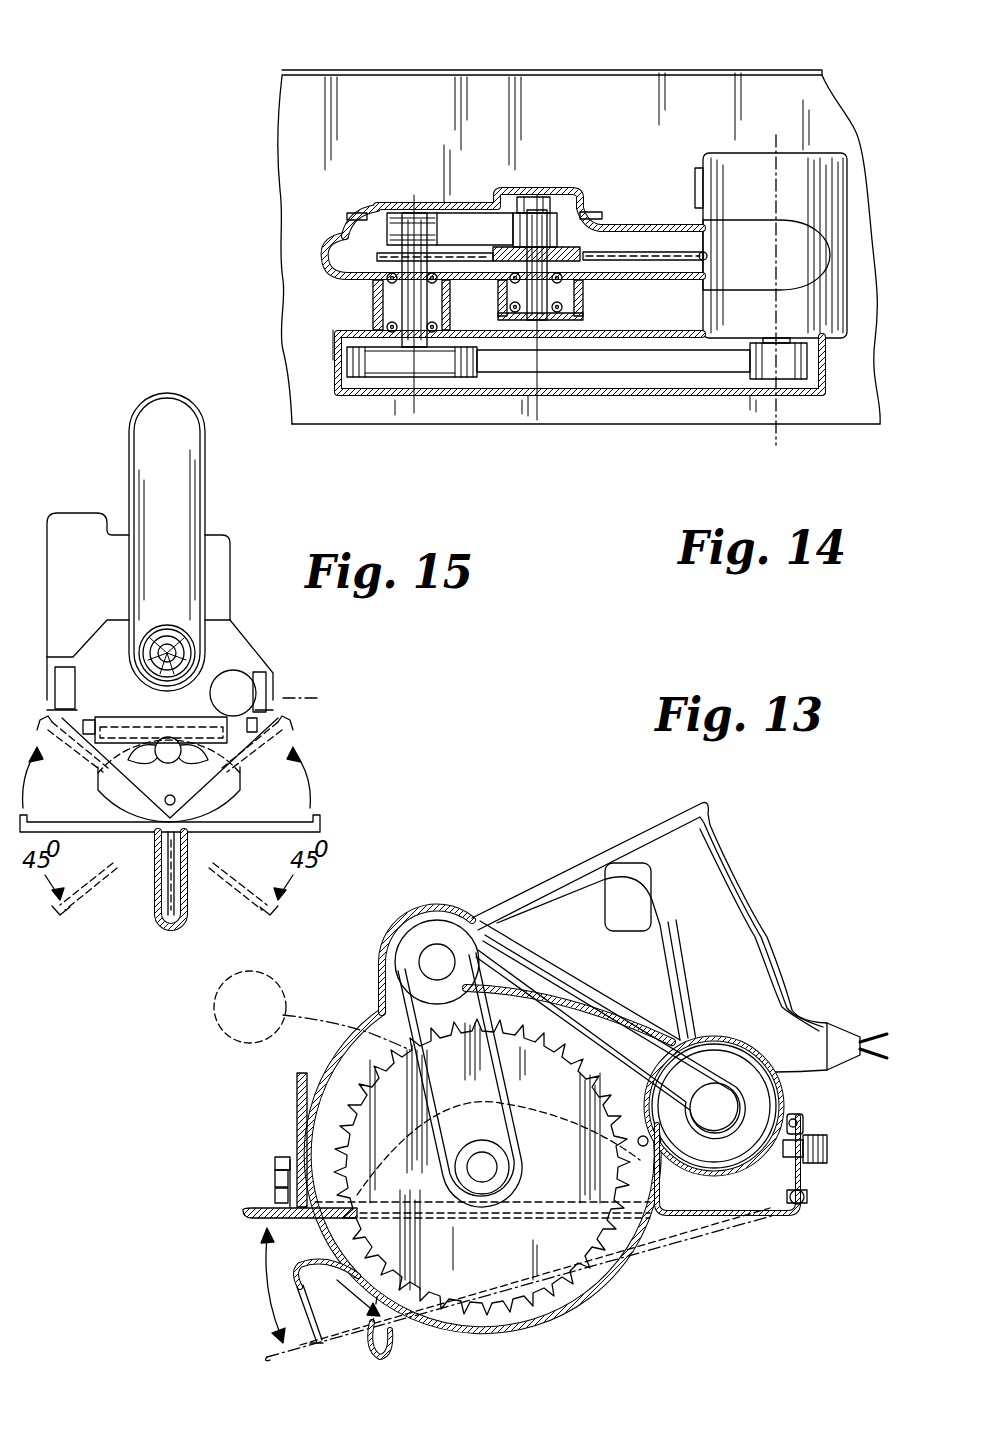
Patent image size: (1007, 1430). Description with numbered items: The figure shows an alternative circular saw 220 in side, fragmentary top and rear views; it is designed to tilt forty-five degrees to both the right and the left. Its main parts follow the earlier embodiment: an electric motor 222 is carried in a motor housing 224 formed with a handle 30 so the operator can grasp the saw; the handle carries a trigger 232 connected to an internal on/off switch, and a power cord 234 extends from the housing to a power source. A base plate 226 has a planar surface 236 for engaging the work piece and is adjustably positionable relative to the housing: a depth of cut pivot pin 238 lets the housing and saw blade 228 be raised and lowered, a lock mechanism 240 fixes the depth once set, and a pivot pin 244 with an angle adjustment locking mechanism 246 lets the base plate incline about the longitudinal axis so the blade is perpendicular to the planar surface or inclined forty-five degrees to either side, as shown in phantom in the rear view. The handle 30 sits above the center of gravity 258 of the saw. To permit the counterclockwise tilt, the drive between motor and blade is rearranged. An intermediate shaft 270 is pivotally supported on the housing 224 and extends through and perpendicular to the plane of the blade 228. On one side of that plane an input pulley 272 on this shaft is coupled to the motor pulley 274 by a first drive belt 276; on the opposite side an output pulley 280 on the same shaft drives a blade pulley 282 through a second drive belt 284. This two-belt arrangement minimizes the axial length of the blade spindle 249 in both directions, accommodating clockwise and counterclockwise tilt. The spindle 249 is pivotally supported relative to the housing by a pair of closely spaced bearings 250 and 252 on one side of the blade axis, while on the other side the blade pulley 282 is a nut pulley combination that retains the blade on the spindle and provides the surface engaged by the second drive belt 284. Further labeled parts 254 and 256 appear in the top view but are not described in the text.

In FIG. 13, the handle 30 is at (743, 892).
In FIG. 14, the circular saw 220 is at (517, 432).
In FIG. 13, the circular saw 220 is at (252, 1270).
In FIG. 14, the electric motor 222 is at (763, 152).
In FIG. 13, the motor housing 224 is at (372, 1035).
In FIG. 14, the base plate 226 is at (530, 72).
In FIG. 14, the saw blade 228 is at (385, 251).
In FIG. 15, the saw blade 228 is at (173, 917).
In FIG. 13, the saw blade 228 is at (300, 1080).
In FIG. 13, the trigger 232 is at (619, 902).
In FIG. 13, the power cord 234 is at (837, 1030).
In FIG. 15, the planar surface 236 is at (315, 833).
In FIG. 13, the planar surface 236 is at (723, 1218).
In FIG. 13, the depth of cut pivot pin 238 is at (803, 1113).
In FIG. 13, the lock mechanism 240 is at (806, 1198).
In FIG. 13, the pivot pin 244 is at (283, 1203).
In FIG. 13, the angle adjustment locking mechanism 246 is at (828, 1147).
In FIG. 14, the blade spindle 249 is at (514, 312).
In FIG. 14, the bearing 250 is at (547, 300).
In FIG. 14, the bearing 252 is at (578, 300).
In FIG. 14, the flange 254 is at (537, 322).
In FIG. 14, the motor axis 256 is at (780, 390).
In FIG. 15, the motor axis 256 is at (303, 700).
In FIG. 13, the center of gravity 258 is at (655, 1185).
In FIG. 14, the intermediate shaft 270 is at (405, 297).
In FIG. 14, the input pulley 272 is at (382, 378).
In FIG. 14, the motor pulley 274 is at (765, 380).
In FIG. 14, the first drive belt 276 is at (708, 362).
In FIG. 14, the output pulley 280 is at (410, 225).
In FIG. 14, the blade pulley 282 is at (582, 205).
In FIG. 14, the second drive belt 284 is at (471, 230).